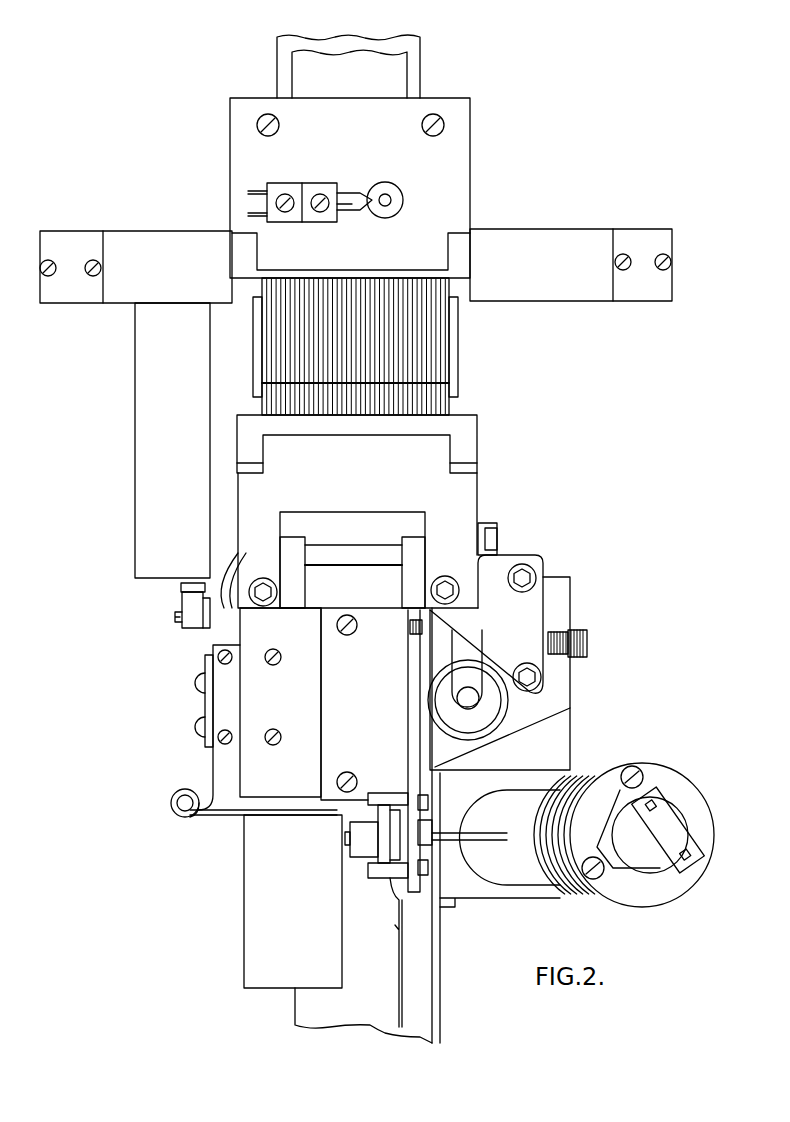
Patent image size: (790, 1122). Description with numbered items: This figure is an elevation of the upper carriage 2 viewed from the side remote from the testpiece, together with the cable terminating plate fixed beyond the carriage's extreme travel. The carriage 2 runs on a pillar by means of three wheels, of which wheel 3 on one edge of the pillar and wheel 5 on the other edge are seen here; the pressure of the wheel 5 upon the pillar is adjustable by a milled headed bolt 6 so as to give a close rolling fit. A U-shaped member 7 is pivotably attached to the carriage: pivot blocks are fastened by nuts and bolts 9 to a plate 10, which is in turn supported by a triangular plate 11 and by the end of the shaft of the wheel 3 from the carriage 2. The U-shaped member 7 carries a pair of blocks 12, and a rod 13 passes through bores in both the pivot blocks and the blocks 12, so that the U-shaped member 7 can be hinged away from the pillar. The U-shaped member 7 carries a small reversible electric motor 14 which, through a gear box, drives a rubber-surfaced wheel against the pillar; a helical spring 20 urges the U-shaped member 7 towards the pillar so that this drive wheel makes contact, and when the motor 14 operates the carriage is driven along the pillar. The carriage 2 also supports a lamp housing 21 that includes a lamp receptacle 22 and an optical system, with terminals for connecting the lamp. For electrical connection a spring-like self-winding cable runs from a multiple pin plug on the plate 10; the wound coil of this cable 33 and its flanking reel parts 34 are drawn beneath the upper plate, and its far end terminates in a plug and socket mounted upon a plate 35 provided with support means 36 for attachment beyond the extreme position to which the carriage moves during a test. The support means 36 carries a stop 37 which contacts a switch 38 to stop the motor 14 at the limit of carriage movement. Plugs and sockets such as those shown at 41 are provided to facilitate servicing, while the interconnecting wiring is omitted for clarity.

The carriage 2 is at (540, 737).
The wheel 3 is at (235, 600).
The wheel 5 is at (493, 710).
The milled headed bolt 6 is at (558, 635).
The U-shaped member 7 is at (252, 763).
The nuts and bolts 9 is at (258, 580).
The plate 10 is at (427, 452).
The triangular plate 11 is at (502, 563).
The blocks 12 is at (292, 548).
The rod 13 is at (380, 555).
The reversible electric motor 14 is at (265, 905).
The helical spring 20 is at (185, 818).
The lamp housing 21 is at (538, 877).
The lamp receptacle 22 is at (652, 888).
The coil 33 is at (413, 331).
The coil brackets 34 is at (457, 362).
The plate 35 is at (452, 200).
The support means 36 is at (117, 245).
The stop 37 is at (163, 392).
The switch 38 is at (188, 602).
The plugs and sockets 41 is at (267, 182).